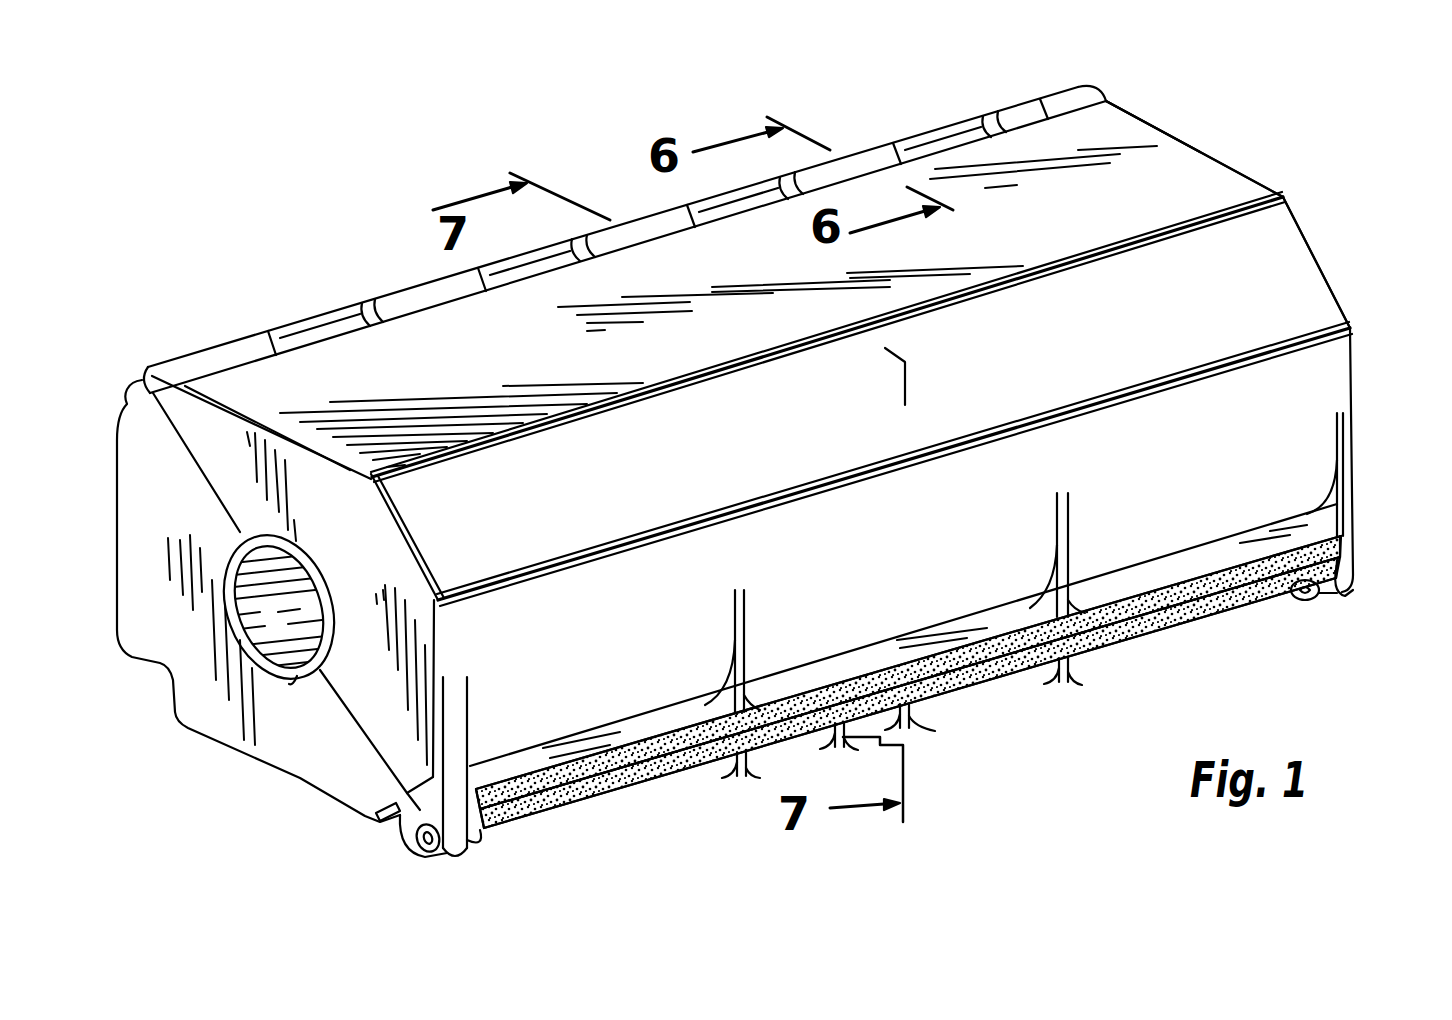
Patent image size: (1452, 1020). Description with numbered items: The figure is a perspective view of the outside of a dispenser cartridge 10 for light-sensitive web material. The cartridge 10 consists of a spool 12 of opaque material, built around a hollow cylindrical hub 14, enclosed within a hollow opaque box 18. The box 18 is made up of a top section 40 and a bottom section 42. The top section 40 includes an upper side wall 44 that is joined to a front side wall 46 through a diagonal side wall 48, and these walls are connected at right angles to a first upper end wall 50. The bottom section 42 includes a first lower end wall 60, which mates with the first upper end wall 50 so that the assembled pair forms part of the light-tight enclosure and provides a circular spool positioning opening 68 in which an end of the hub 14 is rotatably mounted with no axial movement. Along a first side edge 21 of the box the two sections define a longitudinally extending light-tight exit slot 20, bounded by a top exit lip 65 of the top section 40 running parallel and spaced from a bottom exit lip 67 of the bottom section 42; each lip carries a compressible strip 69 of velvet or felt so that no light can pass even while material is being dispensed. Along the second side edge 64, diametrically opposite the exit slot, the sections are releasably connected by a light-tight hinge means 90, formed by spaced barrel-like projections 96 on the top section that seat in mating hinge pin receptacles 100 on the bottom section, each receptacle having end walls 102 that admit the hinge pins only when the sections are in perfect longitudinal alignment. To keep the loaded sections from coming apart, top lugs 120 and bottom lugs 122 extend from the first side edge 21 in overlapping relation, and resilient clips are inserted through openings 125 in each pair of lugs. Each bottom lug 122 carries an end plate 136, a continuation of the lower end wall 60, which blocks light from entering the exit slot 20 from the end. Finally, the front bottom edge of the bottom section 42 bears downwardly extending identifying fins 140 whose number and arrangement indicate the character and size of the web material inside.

The dispenser cartridge 10 is at (1325, 182).
The spool 12 is at (290, 598).
The hollow cylindrical hub 14 is at (327, 590).
The hollow box 18 is at (1190, 120).
The exit slot 20 is at (1237, 590).
The first side edge 21 is at (692, 768).
The top section 40 is at (1183, 150).
The bottom section 42 is at (299, 764).
The upper side wall 44 is at (1220, 166).
The front side wall 46 is at (1327, 353).
The diagonal side wall 48 is at (1293, 258).
The first upper end wall 50 is at (360, 513).
The first lower end wall 60 is at (150, 458).
The second side edge 64 is at (137, 351).
The top exit lip 65 is at (1300, 515).
The bottom exit lip 67 is at (1125, 628).
The spool positioning opening 68 is at (292, 668).
The compressible strip 69 is at (565, 772).
The hinge means 90 is at (1105, 87).
The barrel-like projection 96 is at (947, 137).
The hinge pin receptacle 100 is at (1040, 103).
The receptacle end wall 102 is at (150, 368).
The top lug 120 is at (403, 808).
The bottom lug 122 is at (477, 850).
The opening 125 is at (418, 855).
The end plate 136 is at (377, 817).
The identifying fin 140 is at (885, 722).